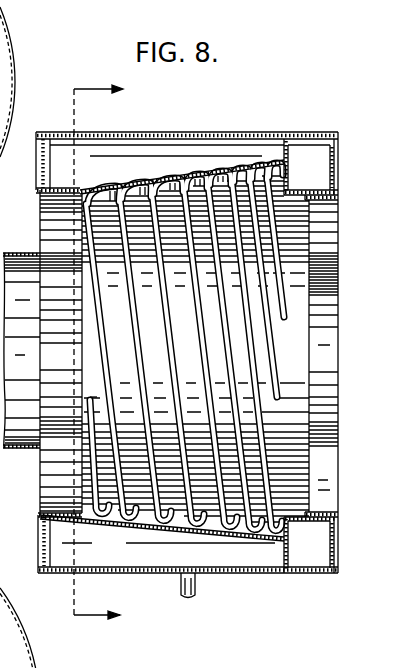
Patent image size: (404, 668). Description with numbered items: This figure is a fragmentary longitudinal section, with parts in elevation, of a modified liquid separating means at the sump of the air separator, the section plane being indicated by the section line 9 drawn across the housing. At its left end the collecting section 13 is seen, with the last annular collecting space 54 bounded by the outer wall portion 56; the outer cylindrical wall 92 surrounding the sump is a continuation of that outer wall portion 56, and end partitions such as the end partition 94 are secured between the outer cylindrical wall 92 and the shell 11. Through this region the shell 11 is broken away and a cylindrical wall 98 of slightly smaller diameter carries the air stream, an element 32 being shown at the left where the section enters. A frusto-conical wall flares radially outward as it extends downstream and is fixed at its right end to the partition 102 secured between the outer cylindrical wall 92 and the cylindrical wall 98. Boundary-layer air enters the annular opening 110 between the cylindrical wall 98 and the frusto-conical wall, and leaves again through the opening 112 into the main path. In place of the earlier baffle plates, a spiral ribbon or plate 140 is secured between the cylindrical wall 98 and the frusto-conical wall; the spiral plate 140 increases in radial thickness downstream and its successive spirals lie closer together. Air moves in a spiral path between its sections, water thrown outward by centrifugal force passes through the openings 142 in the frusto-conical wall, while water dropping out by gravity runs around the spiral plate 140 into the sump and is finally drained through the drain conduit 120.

The section line 9- 9 is at (106, 355).
The cylindrical shell 11 is at (315, 520).
The liquid collecting section 13 is at (62, 573).
The inlet tube 32 is at (8, 253).
The annular collecting space 54 is at (40, 182).
The outer wall portion 56 is at (230, 132).
The outer cylindrical wall 92 is at (175, 132).
The end partition 94 is at (322, 143).
The cylindrical wall 98 is at (85, 478).
The partition 102 is at (294, 143).
The annular opening 110 is at (100, 192).
The opening 112 is at (299, 193).
The drain conduit 120 is at (193, 600).
The spiral ribbon or plate 140 is at (122, 517).
The openings 142 is at (192, 180).